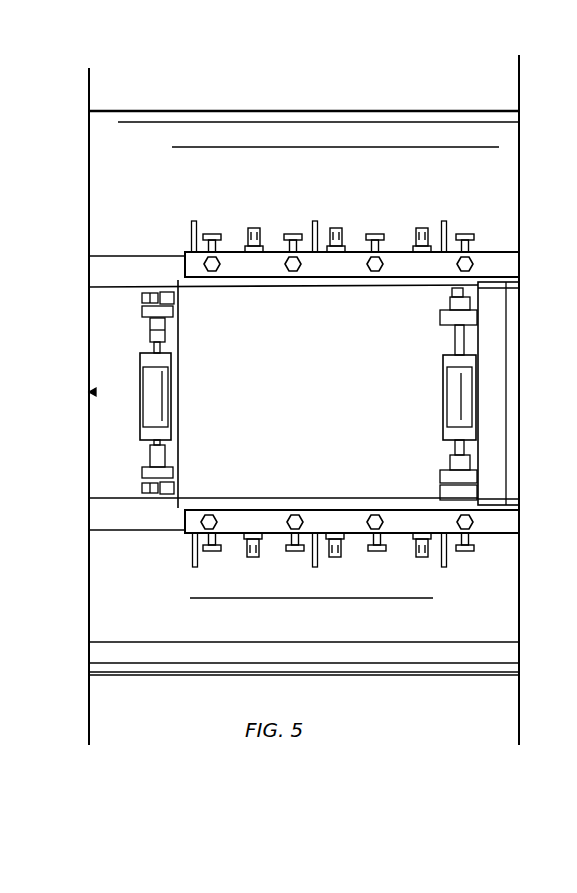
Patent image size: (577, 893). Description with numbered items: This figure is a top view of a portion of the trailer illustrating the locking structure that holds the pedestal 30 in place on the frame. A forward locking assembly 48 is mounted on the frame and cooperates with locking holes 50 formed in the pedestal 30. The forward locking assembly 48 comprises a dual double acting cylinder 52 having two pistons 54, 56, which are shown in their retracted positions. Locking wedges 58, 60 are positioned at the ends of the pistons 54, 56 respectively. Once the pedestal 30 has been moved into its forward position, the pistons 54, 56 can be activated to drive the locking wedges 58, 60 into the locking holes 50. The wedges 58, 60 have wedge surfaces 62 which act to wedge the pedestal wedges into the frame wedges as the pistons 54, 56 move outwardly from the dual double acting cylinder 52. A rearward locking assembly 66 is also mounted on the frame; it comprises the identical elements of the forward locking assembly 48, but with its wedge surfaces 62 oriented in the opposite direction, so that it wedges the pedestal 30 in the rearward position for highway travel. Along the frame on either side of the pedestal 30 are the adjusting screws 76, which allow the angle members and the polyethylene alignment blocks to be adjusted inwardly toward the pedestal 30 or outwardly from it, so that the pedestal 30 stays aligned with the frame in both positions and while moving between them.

The pedestal 30 is at (512, 398).
The forward locking assembly 48 is at (200, 387).
The locking holes 50 is at (156, 296).
The dual double acting cylinder 52 is at (140, 384).
The piston 54 is at (152, 348).
The piston 56 is at (150, 443).
The locking wedge 58 is at (170, 330).
The locking wedge 60 is at (165, 460).
The wedge surfaces 62 is at (148, 318).
The rearward locking assembly 66 is at (414, 380).
The adjusting screws 76 is at (418, 238).